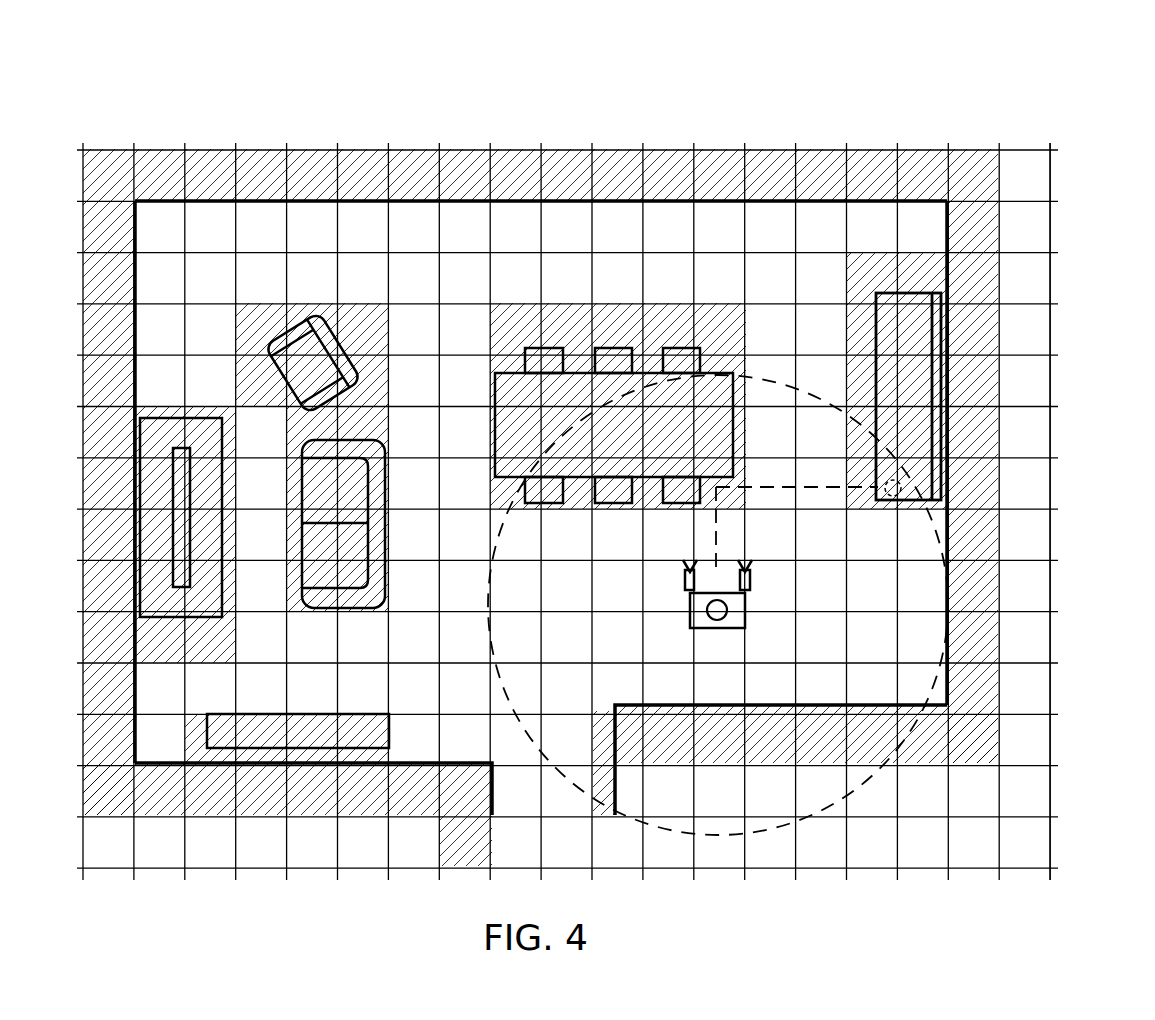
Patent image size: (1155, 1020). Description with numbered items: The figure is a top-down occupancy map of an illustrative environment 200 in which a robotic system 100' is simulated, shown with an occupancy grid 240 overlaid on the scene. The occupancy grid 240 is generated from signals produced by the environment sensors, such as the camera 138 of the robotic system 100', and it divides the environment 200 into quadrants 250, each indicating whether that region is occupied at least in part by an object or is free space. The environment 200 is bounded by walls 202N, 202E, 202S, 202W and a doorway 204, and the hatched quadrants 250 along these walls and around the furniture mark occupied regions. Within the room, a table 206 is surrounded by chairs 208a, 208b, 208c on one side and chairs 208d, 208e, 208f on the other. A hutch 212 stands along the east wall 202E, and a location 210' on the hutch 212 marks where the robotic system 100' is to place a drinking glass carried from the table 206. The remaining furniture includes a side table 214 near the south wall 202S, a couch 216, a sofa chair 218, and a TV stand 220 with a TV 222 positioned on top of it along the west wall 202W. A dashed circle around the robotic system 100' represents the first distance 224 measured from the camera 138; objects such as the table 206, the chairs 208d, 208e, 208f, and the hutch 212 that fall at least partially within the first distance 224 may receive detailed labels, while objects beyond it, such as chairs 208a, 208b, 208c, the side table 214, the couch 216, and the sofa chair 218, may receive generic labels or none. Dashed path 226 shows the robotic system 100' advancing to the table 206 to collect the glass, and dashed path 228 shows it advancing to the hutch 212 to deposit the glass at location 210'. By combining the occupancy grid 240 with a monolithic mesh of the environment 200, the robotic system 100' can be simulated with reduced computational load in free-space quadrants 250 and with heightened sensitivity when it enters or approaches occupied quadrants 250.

The environment 200 is at (1017, 116).
The quadrant 250 is at (512, 166).
The occupancy grid 240 is at (1051, 283).
The north wall 202N is at (773, 203).
The west wall 202W is at (136, 275).
The east wall 202E is at (998, 435).
The south wall 202S is at (457, 763).
The doorway 204 is at (551, 752).
The table 206 is at (734, 373).
The chair 208a is at (542, 348).
The chair 208b is at (617, 348).
The chair 208c is at (699, 348).
The chair 208d is at (550, 503).
The chair 208e is at (617, 503).
The chair 208f is at (683, 503).
The location 210' is at (877, 516).
The hutch 212 is at (900, 293).
The side table 214 is at (312, 714).
The couch 216 is at (384, 522).
The sofa chair 218 is at (313, 312).
The TV stand 220 is at (211, 490).
The TV 222 is at (190, 497).
The first distance 224 is at (488, 610).
The path 226 is at (717, 517).
The path 228 is at (776, 487).
The robotic system 100' is at (755, 619).
The camera 138 is at (718, 621).